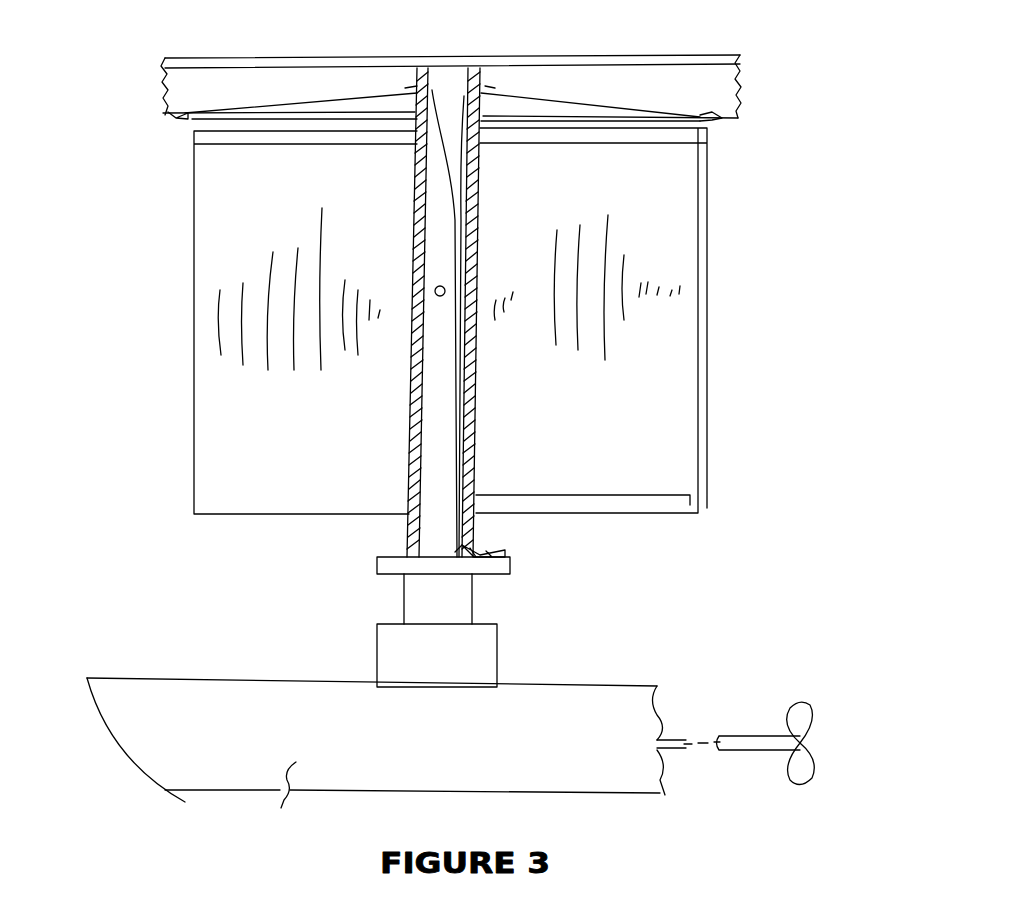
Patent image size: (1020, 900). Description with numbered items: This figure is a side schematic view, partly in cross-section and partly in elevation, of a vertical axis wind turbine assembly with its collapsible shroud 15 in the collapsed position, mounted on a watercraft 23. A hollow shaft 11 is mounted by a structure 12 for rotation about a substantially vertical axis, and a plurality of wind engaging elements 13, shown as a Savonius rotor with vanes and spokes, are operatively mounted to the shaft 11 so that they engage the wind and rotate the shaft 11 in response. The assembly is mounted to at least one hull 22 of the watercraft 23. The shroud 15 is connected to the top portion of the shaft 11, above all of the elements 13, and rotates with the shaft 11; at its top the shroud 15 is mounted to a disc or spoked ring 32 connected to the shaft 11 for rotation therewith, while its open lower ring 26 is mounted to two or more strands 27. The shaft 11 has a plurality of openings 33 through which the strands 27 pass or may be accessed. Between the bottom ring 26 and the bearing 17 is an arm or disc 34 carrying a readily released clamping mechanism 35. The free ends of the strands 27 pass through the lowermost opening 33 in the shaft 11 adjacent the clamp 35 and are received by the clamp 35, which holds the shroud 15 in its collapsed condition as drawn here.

The shaft 11 is at (411, 373).
The structure 12 is at (427, 715).
The wind engaging elements 13 is at (171, 370).
The collapsible shroud 15 is at (486, 277).
The bearing 17 is at (496, 638).
The hull 22 is at (450, 765).
The watercraft 23 is at (84, 632).
The open lower ring 26 is at (175, 119).
The strands 27 is at (356, 92).
The disc or spoked ring 32 is at (632, 58).
The openings 33 is at (410, 90).
The arm or disc 34 is at (508, 566).
The clamping mechanism 35 is at (525, 548).